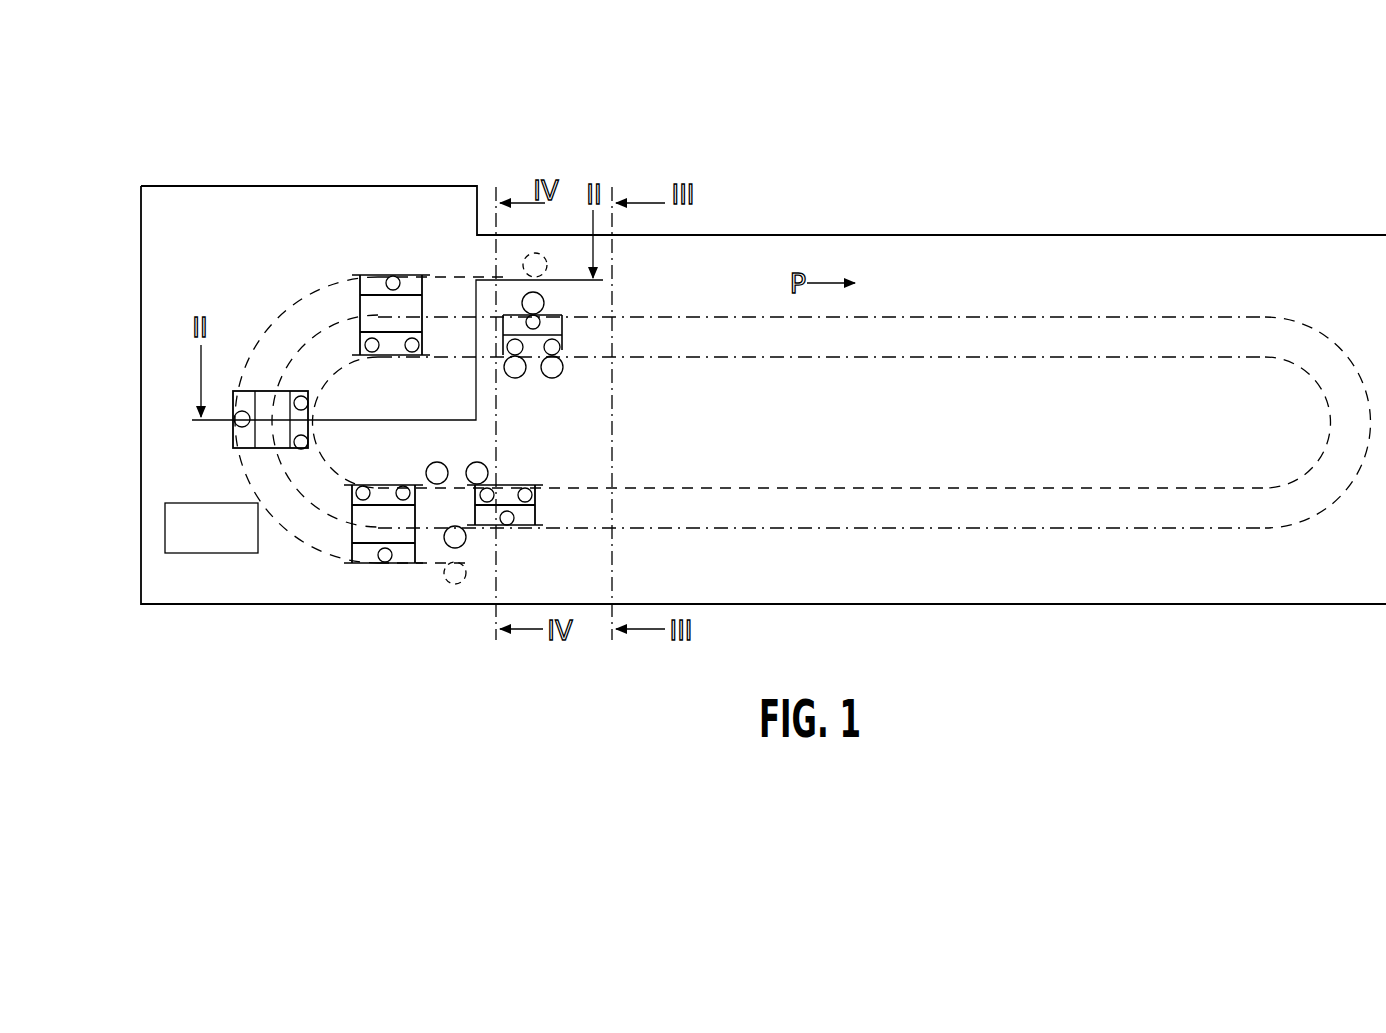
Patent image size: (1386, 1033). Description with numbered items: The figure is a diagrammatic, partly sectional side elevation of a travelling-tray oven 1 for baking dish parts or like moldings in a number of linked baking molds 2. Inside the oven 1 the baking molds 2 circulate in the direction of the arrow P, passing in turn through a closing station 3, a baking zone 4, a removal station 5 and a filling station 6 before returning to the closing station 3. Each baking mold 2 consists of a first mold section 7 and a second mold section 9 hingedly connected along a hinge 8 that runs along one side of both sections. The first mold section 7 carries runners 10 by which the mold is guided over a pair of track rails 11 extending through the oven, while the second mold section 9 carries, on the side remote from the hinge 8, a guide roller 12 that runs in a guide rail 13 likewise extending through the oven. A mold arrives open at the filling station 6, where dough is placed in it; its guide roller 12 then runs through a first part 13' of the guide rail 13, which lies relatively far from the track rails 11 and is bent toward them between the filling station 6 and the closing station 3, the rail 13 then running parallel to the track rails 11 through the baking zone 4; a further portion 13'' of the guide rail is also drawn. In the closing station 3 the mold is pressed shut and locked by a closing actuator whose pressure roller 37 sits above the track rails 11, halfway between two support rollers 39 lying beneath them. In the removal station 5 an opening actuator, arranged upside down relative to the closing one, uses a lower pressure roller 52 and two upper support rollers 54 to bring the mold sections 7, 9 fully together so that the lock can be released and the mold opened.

The travelling-tray oven 1 is at (490, 142).
The baking mold 2 is at (546, 478).
The closing station 3 is at (522, 392).
The baking zone 4 is at (920, 440).
The removal station 5 is at (412, 606).
The filling station 6 is at (323, 257).
The first mold section 7 is at (397, 355).
The hinge 8 is at (423, 334).
The second mold section 9 is at (412, 308).
The runners 10 is at (309, 402).
The track rails 11 is at (762, 358).
The guide roller 12 is at (394, 275).
The guide rail 13 is at (842, 416).
The first part of the guide rail 13' is at (306, 402).
The inner path loop 13'' is at (299, 401).
The pressure roller 37 is at (545, 300).
The support rollers 39 is at (525, 375).
The pressure roller 52 is at (466, 541).
The support rollers 54 is at (470, 462).